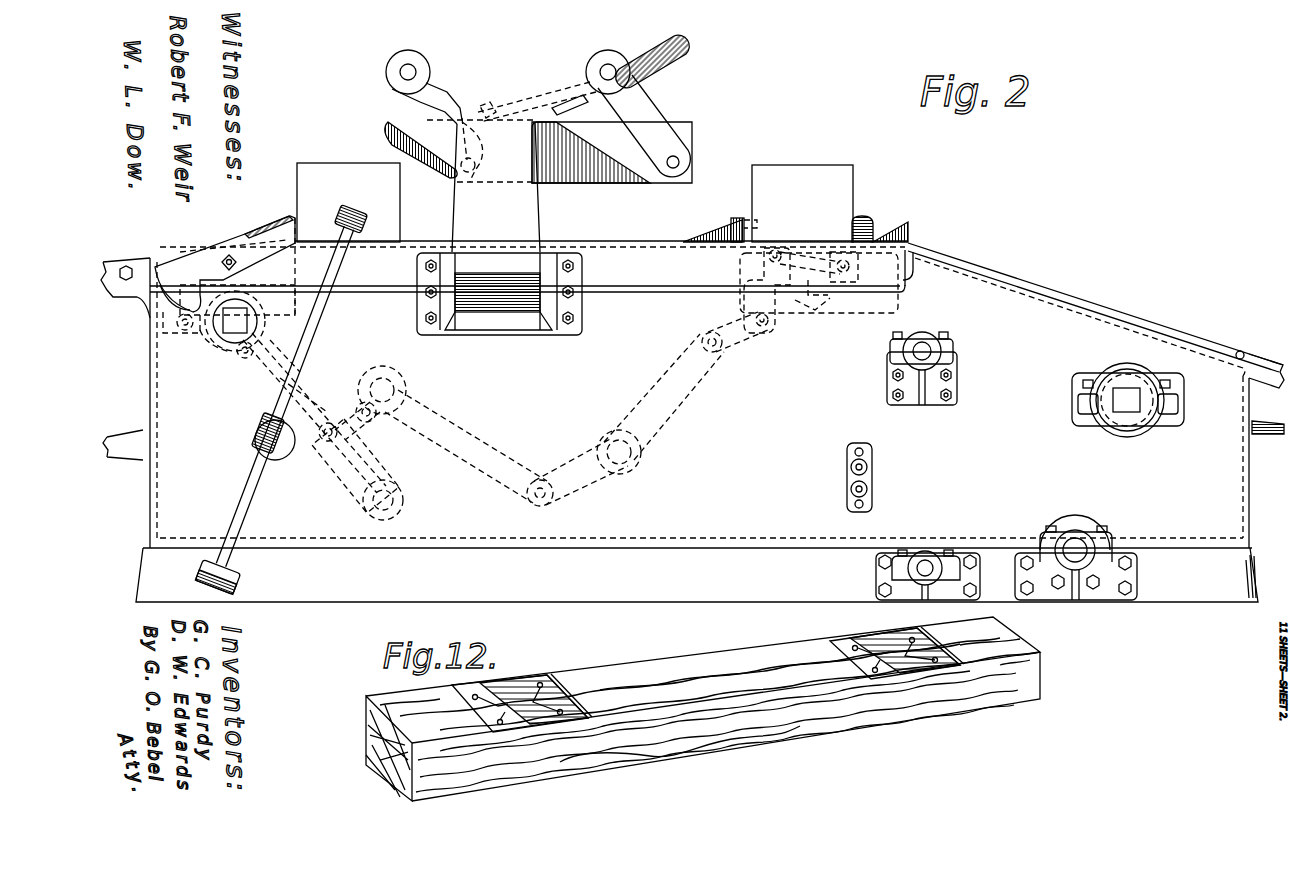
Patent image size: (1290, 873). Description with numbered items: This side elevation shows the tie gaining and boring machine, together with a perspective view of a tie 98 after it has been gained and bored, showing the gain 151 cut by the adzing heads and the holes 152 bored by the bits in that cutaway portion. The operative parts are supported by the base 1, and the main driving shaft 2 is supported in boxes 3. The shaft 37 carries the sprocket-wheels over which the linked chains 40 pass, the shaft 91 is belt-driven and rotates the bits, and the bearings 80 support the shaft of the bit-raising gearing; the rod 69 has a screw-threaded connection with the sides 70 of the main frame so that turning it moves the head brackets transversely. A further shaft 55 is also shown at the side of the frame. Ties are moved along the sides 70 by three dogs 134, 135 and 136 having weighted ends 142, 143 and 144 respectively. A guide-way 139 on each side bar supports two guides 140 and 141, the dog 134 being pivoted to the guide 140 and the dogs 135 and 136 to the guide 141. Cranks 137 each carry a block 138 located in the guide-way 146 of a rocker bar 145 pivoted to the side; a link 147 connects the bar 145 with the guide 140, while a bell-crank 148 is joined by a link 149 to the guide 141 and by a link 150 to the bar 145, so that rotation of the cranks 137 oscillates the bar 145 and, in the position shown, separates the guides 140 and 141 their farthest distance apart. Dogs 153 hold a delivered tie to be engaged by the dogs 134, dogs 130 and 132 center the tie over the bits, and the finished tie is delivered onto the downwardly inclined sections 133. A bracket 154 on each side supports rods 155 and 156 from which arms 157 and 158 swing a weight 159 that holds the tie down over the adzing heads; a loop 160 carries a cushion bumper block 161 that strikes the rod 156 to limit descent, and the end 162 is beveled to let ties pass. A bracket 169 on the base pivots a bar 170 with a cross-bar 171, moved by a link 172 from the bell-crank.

In FIG. 2, the base 1 is at (346, 602).
In FIG. 2, the main driving shaft 2 is at (1079, 549).
In FIG. 2, the boxes 3 is at (1044, 552).
In FIG. 2, the shaft 37 is at (1131, 394).
In FIG. 2, the linked chains 40 is at (394, 391).
In FIG. 2, the shaft 55 is at (228, 320).
In FIG. 2, the rod 69 is at (869, 466).
In FIG. 2, the sides of the main frame 70 is at (609, 240).
In FIG. 2, the bearings 80 is at (923, 350).
In FIG. 2, the shaft 91 is at (927, 565).
In FIG. 2, the ties 98 is at (350, 164).
In FIG. 12, the ties 98 is at (700, 658).
In FIG. 2, the dog 130 is at (740, 216).
In FIG. 2, the dog 132 is at (871, 222).
In FIG. 2, the downwardly inclined sections 133 is at (1025, 286).
In FIG. 2, the dog 134 is at (276, 222).
In FIG. 2, the dog 135 is at (701, 232).
In FIG. 2, the dog 136 is at (909, 241).
In FIG. 2, the cranks 137 is at (355, 385).
In FIG. 2, the block 138 is at (318, 440).
In FIG. 2, the guide-way 139 is at (636, 287).
In FIG. 2, the guide 140 is at (230, 309).
In FIG. 2, the guide 141 is at (820, 312).
In FIG. 2, the weighted end 142 is at (190, 262).
In FIG. 2, the weighted end 143 is at (782, 322).
In FIG. 2, the weighted end 144 is at (808, 318).
In FIG. 2, the rocker bars 145 is at (263, 387).
In FIG. 2, the guide-way 146 is at (304, 374).
In FIG. 2, the link 147 is at (207, 336).
In FIG. 2, the bell-cranks 148 is at (636, 387).
In FIG. 2, the link 149 is at (748, 346).
In FIG. 2, the link 150 is at (476, 451).
In FIG. 12, the gain 151 is at (501, 684).
In FIG. 12, the holes 152 is at (500, 722).
In FIG. 2, the dogs 153 is at (178, 275).
In FIG. 2, the bracket 154 is at (538, 210).
In FIG. 2, the rod 155 is at (412, 70).
In FIG. 2, the rod 156 is at (606, 70).
In FIG. 2, the arms 157 is at (400, 96).
In FIG. 2, the arms 158 is at (647, 110).
In FIG. 2, the weights 159 is at (612, 152).
In FIG. 2, the loop 160 is at (655, 45).
In FIG. 2, the cushion bumper block 161 is at (686, 48).
In FIG. 2, the beveled end 162 is at (406, 149).
In FIG. 2, the bracket 169 is at (237, 580).
In FIG. 2, the bar 170 is at (238, 502).
In FIG. 2, the cross-bar 171 is at (350, 206).
In FIG. 2, the link 172 is at (253, 431).